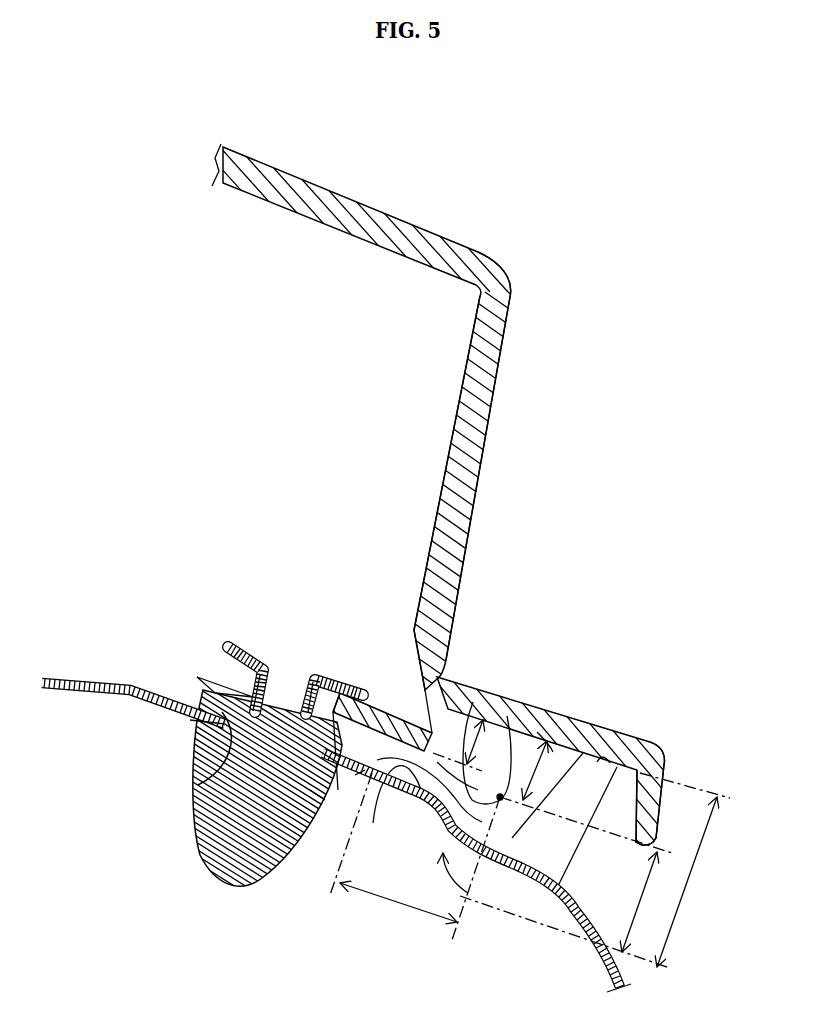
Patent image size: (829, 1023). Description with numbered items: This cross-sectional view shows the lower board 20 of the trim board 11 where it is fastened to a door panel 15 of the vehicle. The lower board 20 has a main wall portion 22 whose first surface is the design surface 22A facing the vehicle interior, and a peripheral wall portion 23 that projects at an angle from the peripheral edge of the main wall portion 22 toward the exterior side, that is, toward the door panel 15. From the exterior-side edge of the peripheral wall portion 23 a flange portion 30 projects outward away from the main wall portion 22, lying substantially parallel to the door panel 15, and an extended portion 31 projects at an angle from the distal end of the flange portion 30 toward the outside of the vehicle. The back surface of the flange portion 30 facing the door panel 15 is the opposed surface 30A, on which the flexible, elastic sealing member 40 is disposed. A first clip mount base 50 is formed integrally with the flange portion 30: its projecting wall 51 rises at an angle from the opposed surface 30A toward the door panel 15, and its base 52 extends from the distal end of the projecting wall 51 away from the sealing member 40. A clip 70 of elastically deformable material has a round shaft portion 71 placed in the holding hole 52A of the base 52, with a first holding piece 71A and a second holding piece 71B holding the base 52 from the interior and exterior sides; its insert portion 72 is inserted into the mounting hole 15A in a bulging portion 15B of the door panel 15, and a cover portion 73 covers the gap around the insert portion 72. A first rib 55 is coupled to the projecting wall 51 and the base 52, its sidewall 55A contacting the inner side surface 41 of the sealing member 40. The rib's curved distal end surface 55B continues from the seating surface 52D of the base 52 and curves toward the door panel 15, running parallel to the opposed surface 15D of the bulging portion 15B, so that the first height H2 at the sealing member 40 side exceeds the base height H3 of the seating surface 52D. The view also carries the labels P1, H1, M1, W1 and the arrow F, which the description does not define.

The trim board 11 is at (410, 388).
The lower board 20 is at (388, 388).
The main wall portion 22 is at (365, 392).
The design surface 22A is at (432, 230).
The peripheral wall portion 23 is at (487, 362).
The first clip mount base 50 is at (391, 699).
The projecting wall 51 is at (413, 652).
The base 52 is at (349, 752).
The holding hole 52A is at (303, 680).
The seating surface 52D is at (338, 792).
The flange portion 30 is at (573, 719).
The opposed surface 30A is at (637, 742).
The extended portion 31 is at (652, 806).
The sealing member 40 is at (597, 938).
The inner side surface 41 is at (507, 735).
The first rib 55 is at (489, 753).
The sidewall 55A is at (538, 732).
The distal end surface 55B is at (373, 824).
The clip 70 is at (241, 740).
The shaft portion 71 is at (260, 617).
The first holding piece 71A is at (207, 675).
The second holding piece 71B is at (343, 675).
The insert portion 72 is at (228, 880).
The cover portion 73 is at (183, 720).
The door panel 15 is at (203, 780).
The mounting hole 15A is at (195, 786).
The bulging portion 15B is at (325, 800).
The opposed surface 15D is at (362, 772).
The reference point P1 is at (500, 800).
The height dimension H1 is at (687, 882).
The first height H2 is at (538, 775).
The base height H3 is at (467, 740).
The dimension M1 is at (644, 902).
The width dimension W1 is at (398, 908).
The force direction F is at (446, 865).